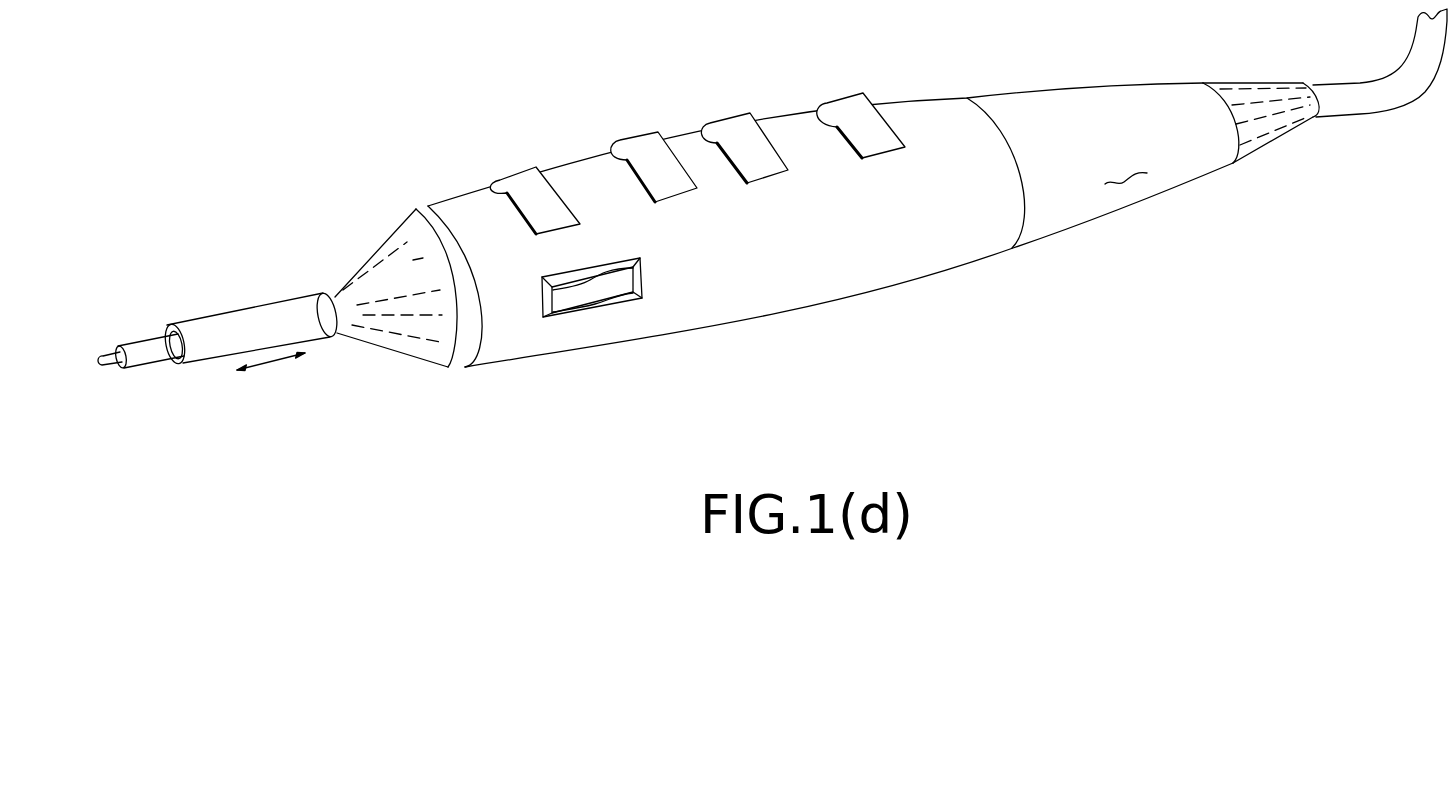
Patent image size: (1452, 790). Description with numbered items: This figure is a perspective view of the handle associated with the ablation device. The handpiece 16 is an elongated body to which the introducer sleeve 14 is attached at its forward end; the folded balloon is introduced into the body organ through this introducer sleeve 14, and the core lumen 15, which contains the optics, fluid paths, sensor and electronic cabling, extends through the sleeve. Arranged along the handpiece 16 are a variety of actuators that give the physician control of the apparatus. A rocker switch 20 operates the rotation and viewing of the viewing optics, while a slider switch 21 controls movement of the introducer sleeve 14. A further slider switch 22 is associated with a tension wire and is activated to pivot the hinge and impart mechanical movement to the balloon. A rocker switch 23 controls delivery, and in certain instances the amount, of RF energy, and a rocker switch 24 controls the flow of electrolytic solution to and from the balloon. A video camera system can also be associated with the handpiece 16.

The introducer sleeve 14 is at (237, 327).
The core lumen 15 is at (107, 365).
The handpiece 16 is at (923, 255).
The rocker switch 20 is at (515, 170).
The slider switch 21 is at (595, 312).
The slider switch 22 is at (638, 142).
The rocker switch 23 is at (730, 125).
The rocker switch 24 is at (845, 100).